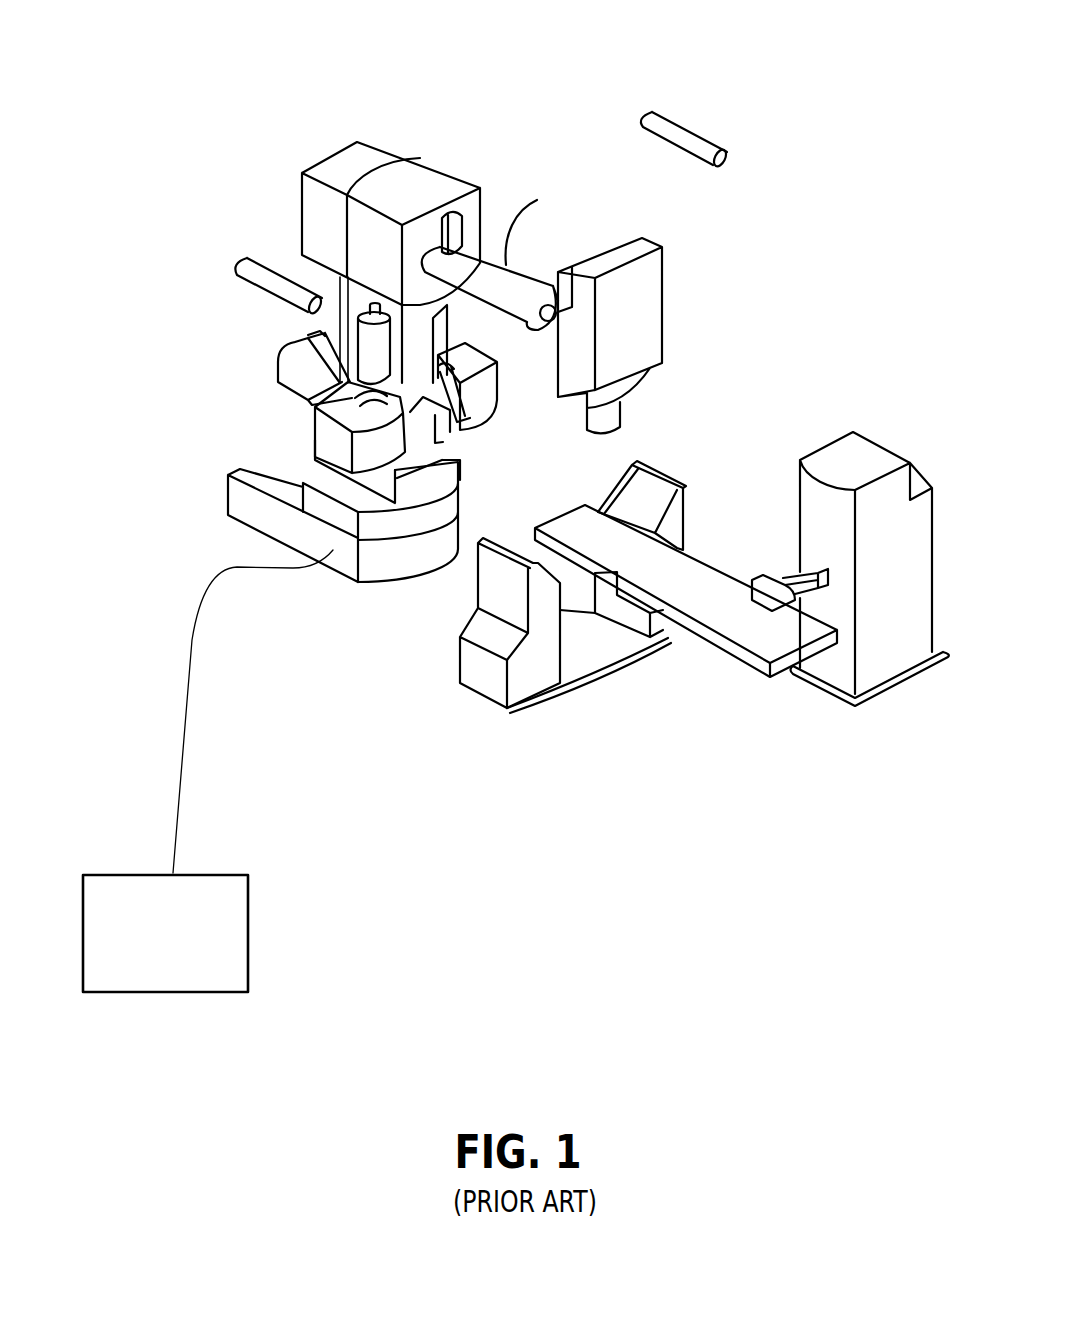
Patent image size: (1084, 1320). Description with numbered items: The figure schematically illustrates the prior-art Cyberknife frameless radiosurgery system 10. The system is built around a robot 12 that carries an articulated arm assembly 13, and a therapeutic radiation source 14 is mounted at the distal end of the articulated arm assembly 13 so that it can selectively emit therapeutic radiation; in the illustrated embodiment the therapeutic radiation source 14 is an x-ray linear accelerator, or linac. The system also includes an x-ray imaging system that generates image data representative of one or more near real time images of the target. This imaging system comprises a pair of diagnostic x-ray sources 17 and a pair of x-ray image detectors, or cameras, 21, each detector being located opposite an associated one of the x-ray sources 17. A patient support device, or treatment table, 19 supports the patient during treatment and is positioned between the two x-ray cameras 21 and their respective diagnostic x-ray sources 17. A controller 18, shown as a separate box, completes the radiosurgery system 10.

The radiosurgery system 10 is at (552, 770).
The robot 12 is at (412, 173).
The articulated arm assembly 13 is at (508, 268).
The therapeutic radiation source 14 is at (643, 308).
The diagnostic x-ray sources 17 is at (690, 128).
The controller 18 is at (132, 960).
The patient support device 19 is at (773, 631).
The x-ray image detectors 21 is at (645, 497).